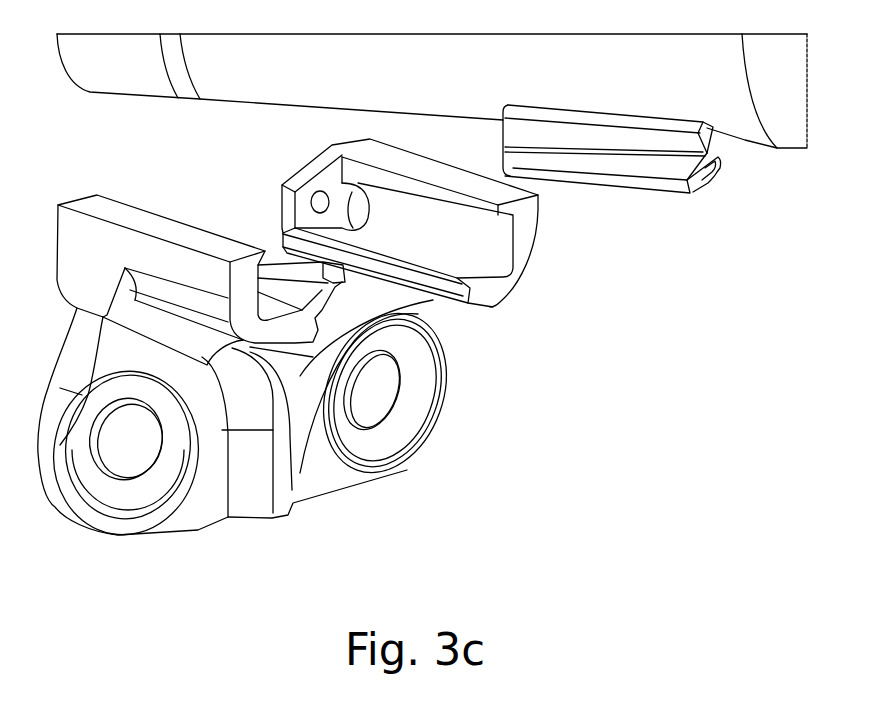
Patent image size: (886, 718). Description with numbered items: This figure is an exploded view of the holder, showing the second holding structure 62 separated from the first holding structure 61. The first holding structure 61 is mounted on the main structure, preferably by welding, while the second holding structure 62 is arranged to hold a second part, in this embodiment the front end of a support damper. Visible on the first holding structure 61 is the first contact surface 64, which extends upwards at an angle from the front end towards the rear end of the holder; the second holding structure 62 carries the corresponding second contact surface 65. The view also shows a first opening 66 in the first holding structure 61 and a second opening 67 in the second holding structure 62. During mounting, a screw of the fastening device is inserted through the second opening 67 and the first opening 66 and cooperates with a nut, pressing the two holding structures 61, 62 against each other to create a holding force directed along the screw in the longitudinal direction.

The first holding structure 61 is at (666, 184).
The second holding structure 62 is at (468, 293).
The first contact surface 64 is at (655, 153).
The second contact surface 65 is at (427, 209).
The first opening 66 is at (713, 190).
The second opening 67 is at (316, 192).